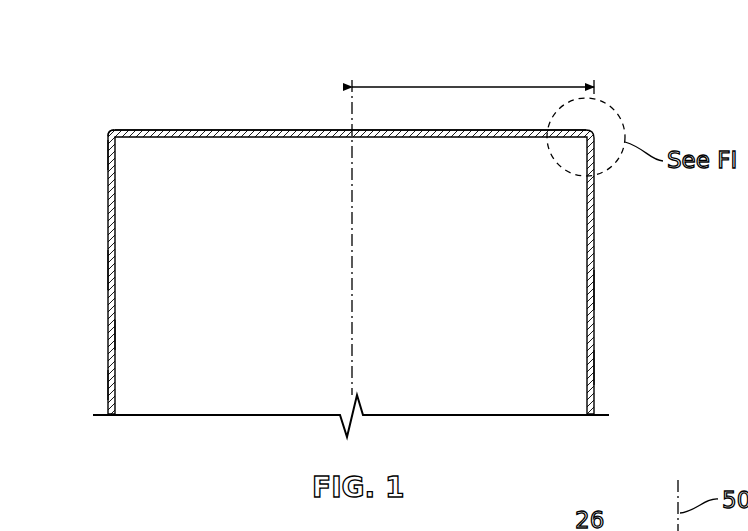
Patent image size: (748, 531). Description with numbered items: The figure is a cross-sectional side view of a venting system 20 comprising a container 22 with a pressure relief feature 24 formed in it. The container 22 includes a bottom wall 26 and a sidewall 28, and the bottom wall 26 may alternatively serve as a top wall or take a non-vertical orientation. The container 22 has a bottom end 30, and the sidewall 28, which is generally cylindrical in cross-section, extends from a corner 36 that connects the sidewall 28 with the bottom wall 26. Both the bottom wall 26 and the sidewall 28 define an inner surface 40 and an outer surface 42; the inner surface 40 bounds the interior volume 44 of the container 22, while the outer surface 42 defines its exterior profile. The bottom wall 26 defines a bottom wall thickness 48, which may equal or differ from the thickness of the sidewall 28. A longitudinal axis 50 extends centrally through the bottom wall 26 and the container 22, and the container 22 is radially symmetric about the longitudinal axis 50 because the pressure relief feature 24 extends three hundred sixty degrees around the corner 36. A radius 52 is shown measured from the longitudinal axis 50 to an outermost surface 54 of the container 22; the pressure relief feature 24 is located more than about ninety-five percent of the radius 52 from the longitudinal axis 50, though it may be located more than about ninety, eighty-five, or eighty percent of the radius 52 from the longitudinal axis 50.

The venting system 20 is at (604, 72).
The container 22 is at (595, 290).
The pressure relief feature 24 is at (603, 123).
The bottom wall 26 is at (163, 130).
The sidewall 28 is at (107, 272).
The bottom end 30 is at (107, 160).
The corner 36 is at (110, 131).
The inner surface 40 is at (115, 337).
The outer surface 42 is at (107, 385).
The interior volume 44 is at (289, 334).
The bottom wall thickness 48 is at (747, 230).
The longitudinal axis 50 is at (353, 122).
The radius 52 is at (440, 86).
The outermost surface 54 is at (595, 366).